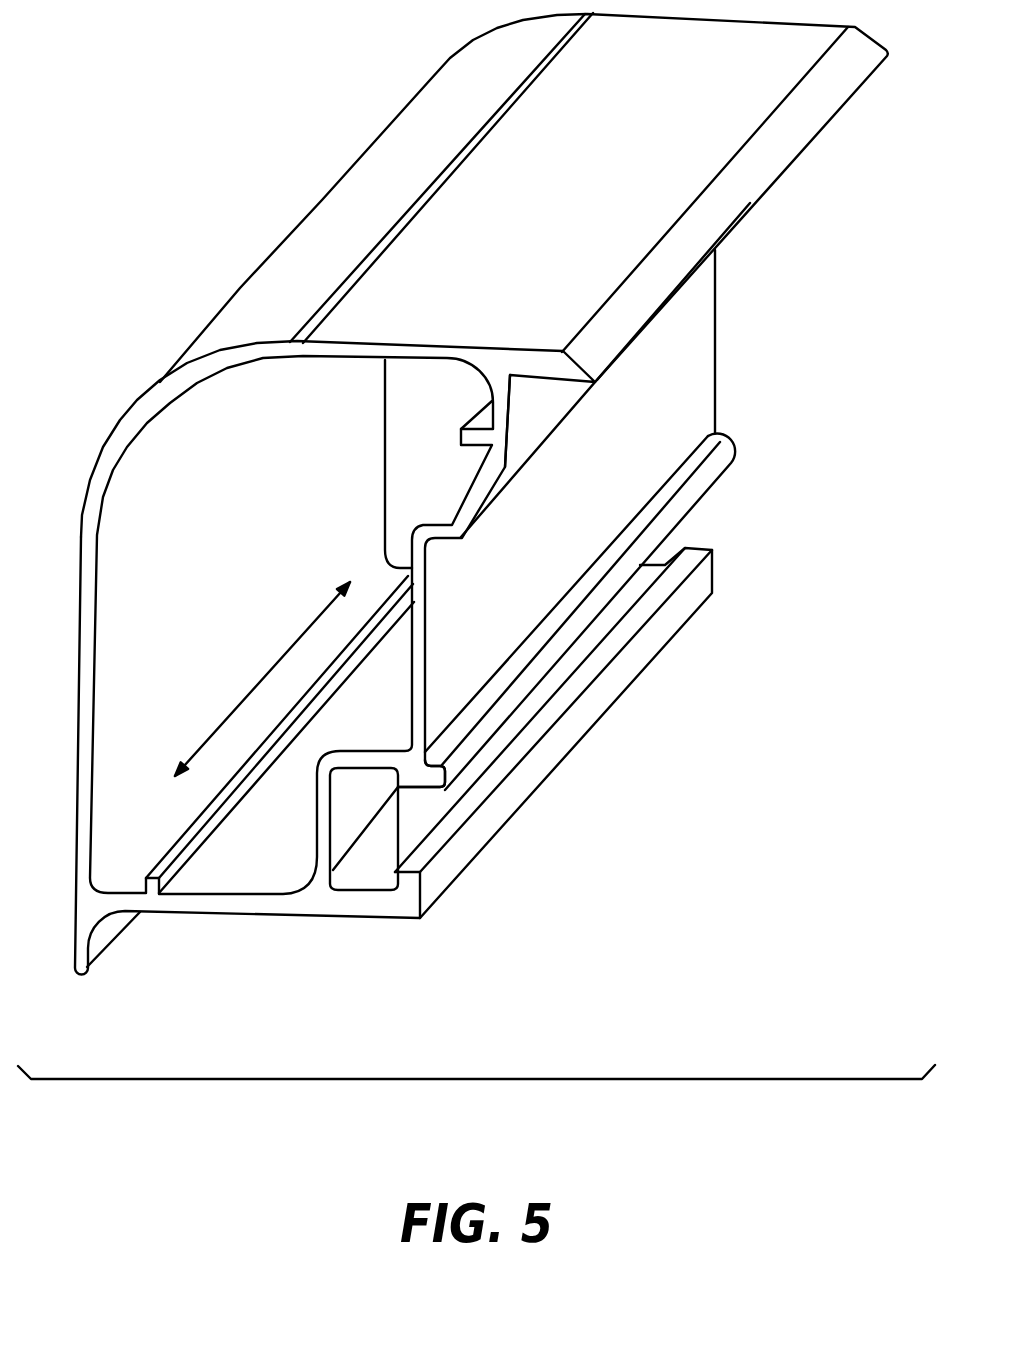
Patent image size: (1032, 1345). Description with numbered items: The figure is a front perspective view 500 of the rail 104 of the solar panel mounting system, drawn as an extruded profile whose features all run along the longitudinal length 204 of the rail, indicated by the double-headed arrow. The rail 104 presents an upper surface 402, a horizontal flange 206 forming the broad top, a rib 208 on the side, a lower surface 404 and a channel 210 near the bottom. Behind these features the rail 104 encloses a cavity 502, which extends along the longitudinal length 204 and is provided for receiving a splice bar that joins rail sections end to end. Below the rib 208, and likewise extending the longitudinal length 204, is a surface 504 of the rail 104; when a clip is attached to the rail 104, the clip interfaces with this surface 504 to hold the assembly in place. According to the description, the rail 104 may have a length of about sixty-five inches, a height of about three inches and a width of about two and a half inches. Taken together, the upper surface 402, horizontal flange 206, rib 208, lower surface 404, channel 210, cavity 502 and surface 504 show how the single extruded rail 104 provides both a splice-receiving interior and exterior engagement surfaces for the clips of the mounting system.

The rail 104 is at (222, 227).
The longitudinal length 204 is at (268, 670).
The horizontal flange 206 is at (543, 350).
The rib 208 is at (565, 613).
The channel 210 is at (434, 806).
The upper surface 402 is at (533, 413).
The lower surface 404 is at (513, 537).
The front perspective view 500 is at (560, 1082).
The cavity 502 is at (224, 875).
The surface 504 is at (573, 731).